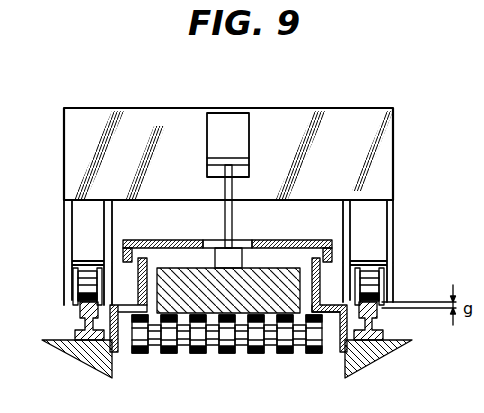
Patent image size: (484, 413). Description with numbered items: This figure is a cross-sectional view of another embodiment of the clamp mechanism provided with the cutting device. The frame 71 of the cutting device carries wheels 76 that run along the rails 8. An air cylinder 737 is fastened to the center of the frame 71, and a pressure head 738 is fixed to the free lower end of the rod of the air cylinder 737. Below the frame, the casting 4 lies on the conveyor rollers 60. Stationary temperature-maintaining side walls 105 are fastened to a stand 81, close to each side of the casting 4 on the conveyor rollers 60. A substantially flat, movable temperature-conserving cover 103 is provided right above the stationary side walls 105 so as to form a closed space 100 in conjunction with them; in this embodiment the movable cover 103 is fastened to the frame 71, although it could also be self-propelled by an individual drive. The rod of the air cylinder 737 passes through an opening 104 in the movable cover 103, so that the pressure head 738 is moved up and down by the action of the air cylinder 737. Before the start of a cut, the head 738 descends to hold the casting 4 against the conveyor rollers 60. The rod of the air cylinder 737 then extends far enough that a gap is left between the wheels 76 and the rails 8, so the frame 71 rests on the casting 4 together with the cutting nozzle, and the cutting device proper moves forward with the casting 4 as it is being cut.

The frame 71 is at (133, 125).
The air cylinder 737 is at (228, 134).
The pressure head 738 is at (214, 248).
The movable temperature-conserving cover 103 is at (138, 240).
The opening 104 is at (242, 243).
The closed space 100 is at (288, 248).
The casting 4 is at (236, 301).
The conveyor rollers 60 is at (227, 332).
The wheels 76 is at (370, 268).
The stand 81 is at (62, 340).
The rails 8 is at (378, 328).
The stationary temperature-maintaining side walls 105 is at (342, 336).